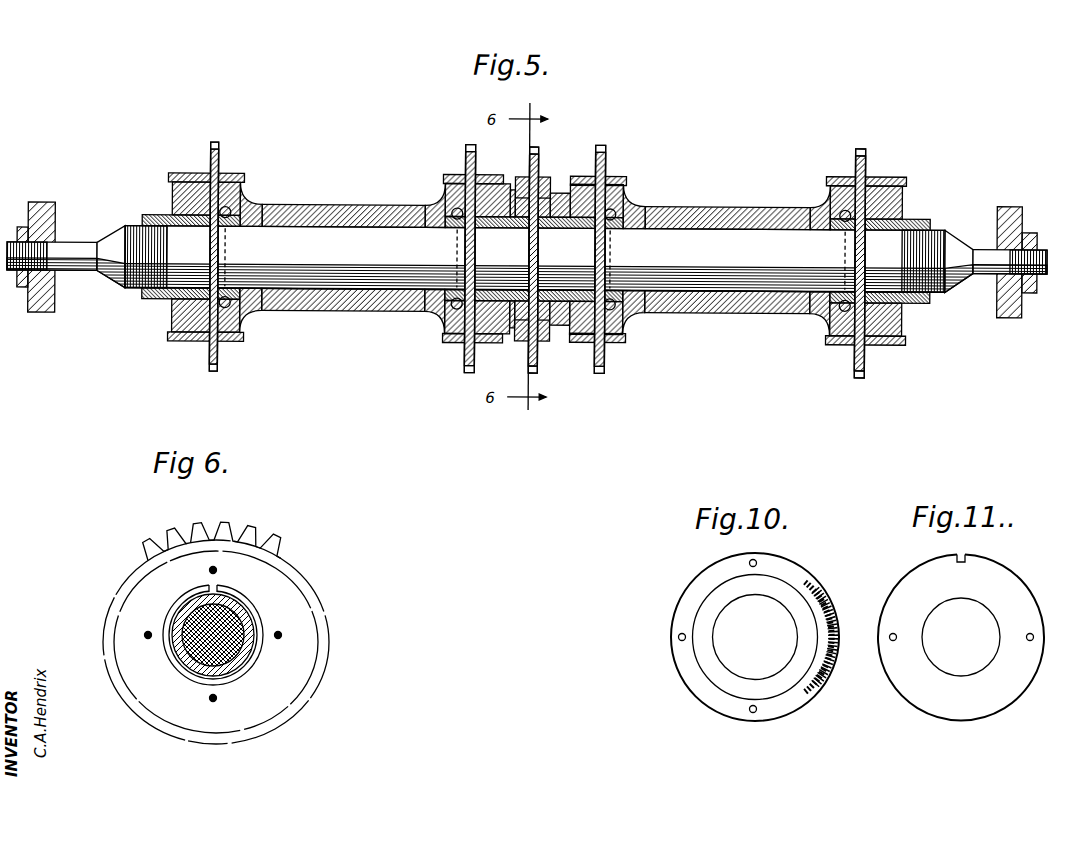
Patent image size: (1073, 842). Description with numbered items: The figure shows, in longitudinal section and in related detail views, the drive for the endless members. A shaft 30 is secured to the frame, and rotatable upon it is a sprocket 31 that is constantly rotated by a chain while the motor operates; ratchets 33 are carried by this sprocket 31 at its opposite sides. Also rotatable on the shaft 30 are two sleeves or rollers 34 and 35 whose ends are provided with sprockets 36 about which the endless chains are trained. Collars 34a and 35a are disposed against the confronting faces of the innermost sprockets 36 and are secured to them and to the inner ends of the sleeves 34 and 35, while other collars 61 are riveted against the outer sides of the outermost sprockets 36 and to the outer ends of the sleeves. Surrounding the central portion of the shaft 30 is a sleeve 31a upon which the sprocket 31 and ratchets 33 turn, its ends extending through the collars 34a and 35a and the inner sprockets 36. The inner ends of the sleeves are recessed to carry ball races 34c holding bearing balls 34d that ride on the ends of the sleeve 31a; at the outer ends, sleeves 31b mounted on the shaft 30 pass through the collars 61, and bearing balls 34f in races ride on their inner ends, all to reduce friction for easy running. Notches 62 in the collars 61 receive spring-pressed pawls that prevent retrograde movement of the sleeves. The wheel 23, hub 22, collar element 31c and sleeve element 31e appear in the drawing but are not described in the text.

In FIG. 5, the wheel hub 22 is at (33, 305).
In FIG. 5, the wheel 23 is at (56, 215).
In FIG. 5, the shaft 30 is at (745, 313).
In FIG. 6, the shaft 30 is at (230, 655).
In FIG. 5, the sprocket 31 is at (539, 153).
In FIG. 6, the sprocket 31 is at (272, 565).
In FIG. 5, the sleeve 31a is at (568, 325).
In FIG. 5, the sleeve 31b is at (160, 298).
In FIG. 6, the split collar 31c is at (214, 583).
In FIG. 6, the bushing sleeve 31e is at (245, 612).
In FIG. 5, the ratchet 33 is at (524, 177).
In FIG. 5, the sleeve 34 is at (366, 196).
In FIG. 5, the collar 34a is at (512, 330).
In FIG. 10, the collar 34a is at (752, 590).
In FIG. 5, the ball race 34c is at (260, 200).
In FIG. 5, the bearing ball 34d is at (440, 198).
In FIG. 5, the bearing ball 34f is at (255, 318).
In FIG. 5, the sleeve 35 is at (716, 203).
In FIG. 5, the collar 35a is at (600, 315).
In FIG. 5, the sprocket 36 is at (218, 168).
In FIG. 5, the collar 61 is at (172, 336).
In FIG. 11, the collar 61 is at (1000, 575).
In FIG. 11, the notch 62 is at (958, 556).